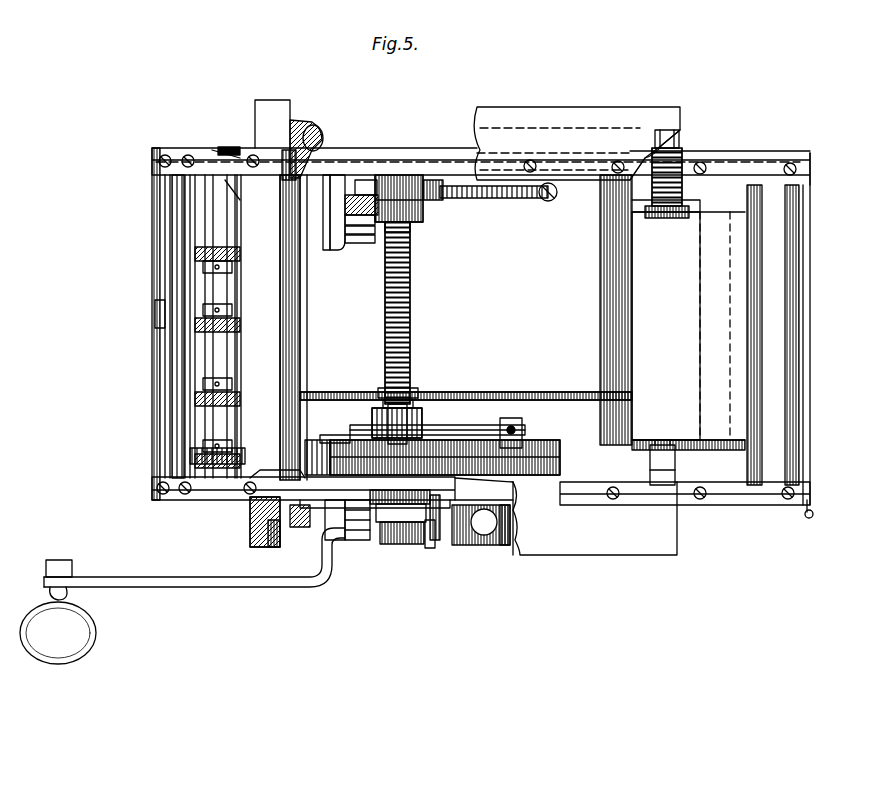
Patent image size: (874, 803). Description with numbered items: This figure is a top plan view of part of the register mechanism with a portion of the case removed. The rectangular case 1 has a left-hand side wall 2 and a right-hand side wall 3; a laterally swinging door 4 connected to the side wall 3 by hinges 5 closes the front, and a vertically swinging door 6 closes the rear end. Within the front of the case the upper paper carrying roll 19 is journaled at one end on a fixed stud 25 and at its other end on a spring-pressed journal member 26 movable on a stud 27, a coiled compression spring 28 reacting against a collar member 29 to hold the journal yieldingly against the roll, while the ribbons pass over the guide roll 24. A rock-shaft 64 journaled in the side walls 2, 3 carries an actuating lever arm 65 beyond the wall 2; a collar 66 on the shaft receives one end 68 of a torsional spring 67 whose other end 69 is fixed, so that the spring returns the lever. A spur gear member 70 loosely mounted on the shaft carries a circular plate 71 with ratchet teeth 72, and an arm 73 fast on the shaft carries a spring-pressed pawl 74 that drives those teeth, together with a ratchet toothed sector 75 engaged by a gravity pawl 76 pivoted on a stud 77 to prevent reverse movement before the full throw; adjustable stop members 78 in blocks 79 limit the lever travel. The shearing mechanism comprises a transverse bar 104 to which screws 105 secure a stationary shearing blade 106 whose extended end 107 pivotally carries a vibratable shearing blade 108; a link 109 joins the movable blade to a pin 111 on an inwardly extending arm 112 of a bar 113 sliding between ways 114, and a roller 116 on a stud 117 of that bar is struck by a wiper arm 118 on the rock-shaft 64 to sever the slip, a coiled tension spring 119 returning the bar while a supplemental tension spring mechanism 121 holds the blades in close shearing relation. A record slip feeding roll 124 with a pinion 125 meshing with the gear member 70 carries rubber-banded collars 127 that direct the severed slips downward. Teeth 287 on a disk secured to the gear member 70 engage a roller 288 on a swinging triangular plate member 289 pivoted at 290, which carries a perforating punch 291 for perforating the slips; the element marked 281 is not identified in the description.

The rectangular case 1 is at (752, 512).
The left-hand side wall 2 is at (530, 540).
The right-hand side wall 3 is at (690, 160).
The laterally swinging door 4 is at (800, 356).
The hinges 5 is at (806, 518).
The vertically swinging door 6 is at (160, 470).
The upper paper carrying roll 19 is at (620, 470).
The guide roll 24 is at (790, 232).
The fixed studs 25 is at (668, 470).
The spring-pressed journal members 26 is at (680, 150).
The studs 27 is at (664, 128).
The coiled compression springs 28 is at (645, 158).
The collar members 29 is at (670, 210).
The rock-shaft 64 is at (410, 300).
The actuating lever arm 65 is at (116, 576).
The collar 66 is at (358, 542).
The torsional spring 67 is at (385, 370).
The spring end 68 is at (375, 420).
The spring end 69 is at (358, 218).
The spur gear member 70 is at (283, 500).
The circular plate 71 is at (428, 550).
The ratchet teeth 72 is at (436, 542).
The arm 73 is at (338, 542).
The spring-pressed pawl 74 is at (300, 528).
The ratchet toothed sector 75 is at (390, 505).
The gravity pawl 76 is at (408, 524).
The stud 77 is at (400, 546).
The adjustable stop members 78 is at (262, 520).
The blocks 79 is at (268, 542).
The transverse bar 104 is at (240, 150).
The screws 105 is at (280, 145).
The stationary shearing blade 106 is at (278, 246).
The extended end of fixed blade 107 is at (300, 135).
The vibratable shearing blade 108 is at (330, 185).
The link 109 is at (225, 150).
The pin 111 is at (357, 248).
The inwardly extending arm 112 is at (372, 185).
The bar 113 is at (350, 190).
The ways 114 is at (420, 185).
The roller 116 is at (412, 208).
The stud 117 is at (357, 235).
The wiper arm 118 is at (398, 218).
The coiled tension spring 119 is at (492, 185).
The supplemental tension spring mechanism 121 is at (508, 392).
The record slip feeding roll 124 is at (207, 268).
The pinion 125 is at (192, 456).
The collars 127 is at (212, 395).
The gear segment 281 is at (312, 438).
The teeth 287 is at (450, 440).
The roller 288 is at (332, 437).
The swinging triangular plate member 289 is at (490, 428).
The pivot 290 is at (520, 428).
The perforating punch 291 is at (412, 398).